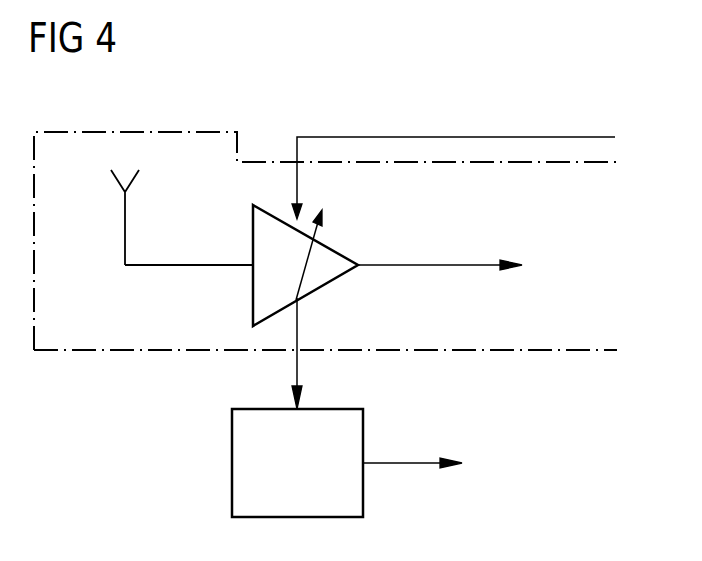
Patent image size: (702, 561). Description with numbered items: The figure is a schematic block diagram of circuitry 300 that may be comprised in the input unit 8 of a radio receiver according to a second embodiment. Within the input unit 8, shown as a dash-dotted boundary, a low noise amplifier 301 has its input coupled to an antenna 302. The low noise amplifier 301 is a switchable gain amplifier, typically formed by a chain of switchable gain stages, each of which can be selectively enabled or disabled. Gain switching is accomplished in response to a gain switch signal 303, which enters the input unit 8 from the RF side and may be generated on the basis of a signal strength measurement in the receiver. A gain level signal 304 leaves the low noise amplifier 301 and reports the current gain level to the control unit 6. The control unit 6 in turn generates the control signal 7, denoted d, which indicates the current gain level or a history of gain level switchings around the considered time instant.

The circuitry 300 is at (546, 95).
The input unit 8 is at (165, 131).
The gain switch signal 303 is at (442, 136).
The antenna 302 is at (125, 222).
The low noise amplifier 301 is at (332, 280).
The gain level signal 304 is at (294, 370).
The control unit 6 is at (232, 448).
The control signal 7 is at (397, 466).